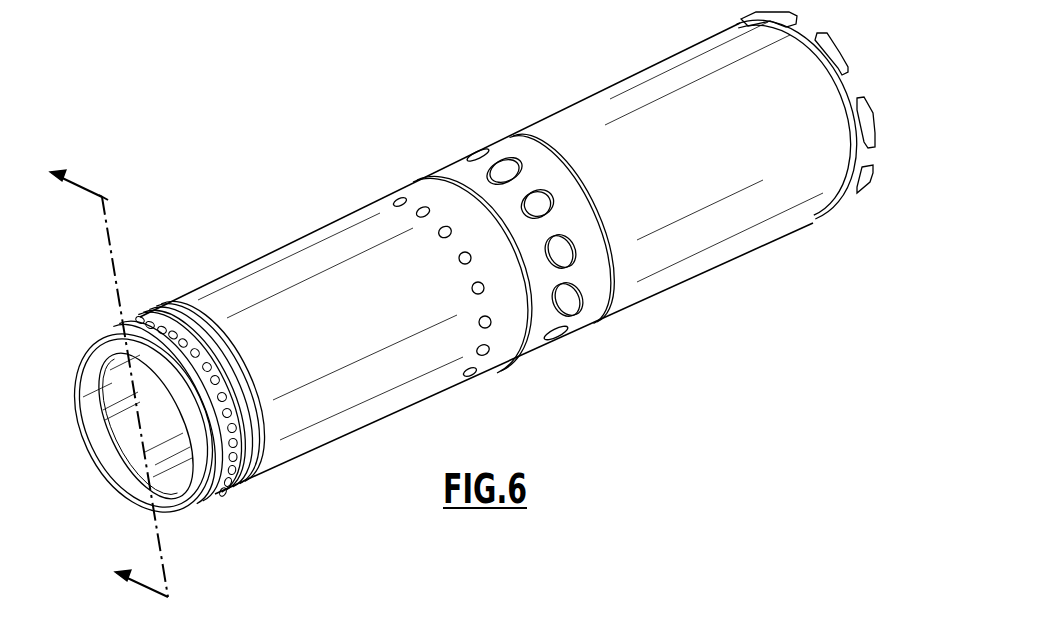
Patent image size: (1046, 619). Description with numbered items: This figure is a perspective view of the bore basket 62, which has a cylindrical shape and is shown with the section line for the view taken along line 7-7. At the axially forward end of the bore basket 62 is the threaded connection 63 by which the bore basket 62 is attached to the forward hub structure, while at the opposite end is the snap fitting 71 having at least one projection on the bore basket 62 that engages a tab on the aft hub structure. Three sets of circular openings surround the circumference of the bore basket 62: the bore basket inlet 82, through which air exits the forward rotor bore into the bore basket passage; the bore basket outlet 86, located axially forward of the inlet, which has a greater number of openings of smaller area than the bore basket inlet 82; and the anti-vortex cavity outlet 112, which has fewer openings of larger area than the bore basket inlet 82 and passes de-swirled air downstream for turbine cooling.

The bore basket 62 is at (498, 257).
The threaded connection 63 is at (135, 338).
The section line 7- 7 is at (102, 377).
The snap fitting 71 is at (838, 42).
The bore basket inlet 82 is at (423, 210).
The bore basket outlet 86 is at (236, 447).
The anti-vortex cavity outlet 112 is at (535, 203).